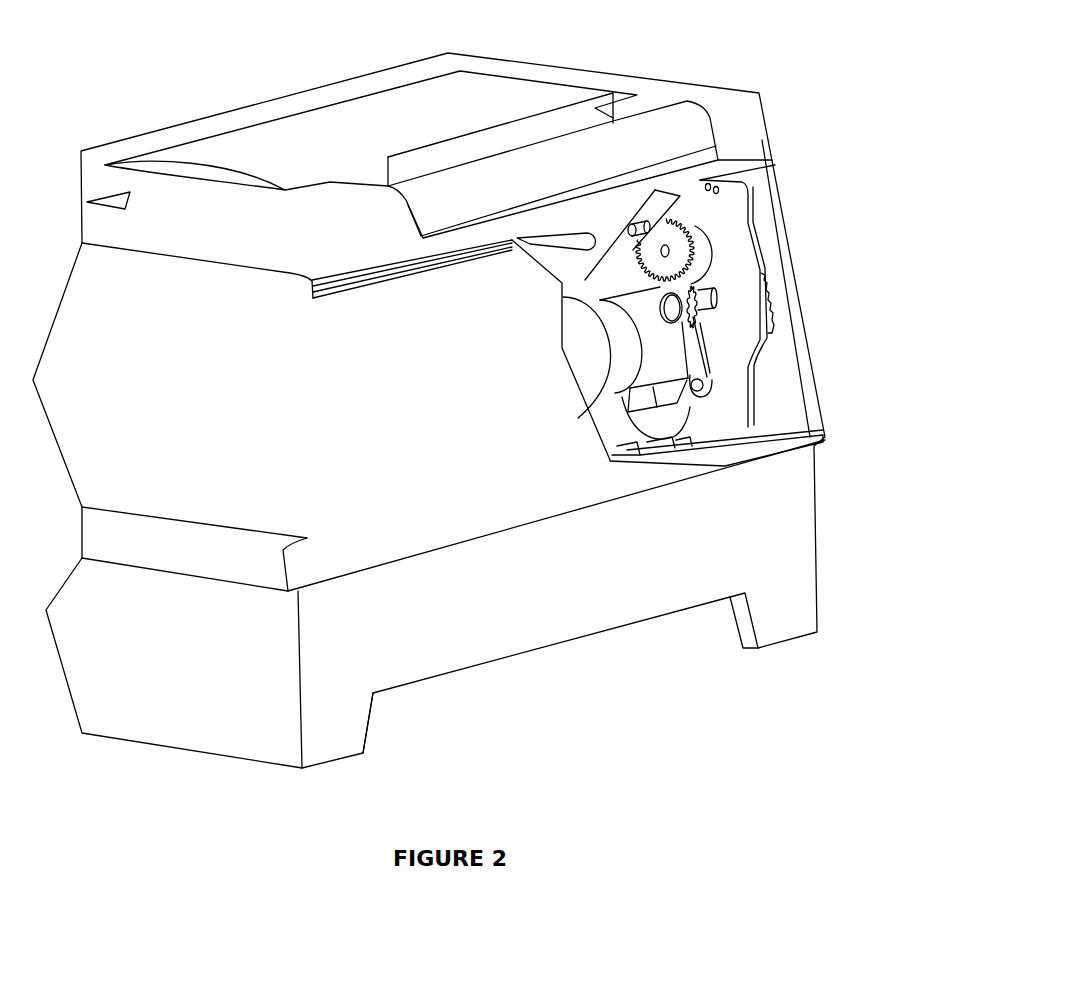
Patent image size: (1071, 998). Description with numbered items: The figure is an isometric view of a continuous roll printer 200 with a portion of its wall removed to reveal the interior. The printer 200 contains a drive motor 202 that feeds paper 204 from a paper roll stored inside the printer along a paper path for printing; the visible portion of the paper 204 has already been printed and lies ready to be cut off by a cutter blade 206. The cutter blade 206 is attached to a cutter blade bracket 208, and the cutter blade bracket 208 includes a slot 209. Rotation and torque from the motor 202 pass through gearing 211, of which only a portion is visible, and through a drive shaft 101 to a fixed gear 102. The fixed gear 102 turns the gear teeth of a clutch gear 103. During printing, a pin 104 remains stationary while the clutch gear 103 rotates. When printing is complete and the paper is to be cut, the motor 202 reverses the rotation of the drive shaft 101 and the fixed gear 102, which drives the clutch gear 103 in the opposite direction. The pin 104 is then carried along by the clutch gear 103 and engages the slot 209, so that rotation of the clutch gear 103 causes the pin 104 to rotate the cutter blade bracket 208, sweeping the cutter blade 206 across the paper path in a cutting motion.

The printer 200 is at (818, 541).
The paper 204 is at (525, 113).
The cutter blade 206 is at (618, 219).
The pin 104 is at (585, 280).
The cutter blade bracket 208 is at (676, 199).
The slot 209 is at (669, 250).
The clutch gear 103 is at (698, 267).
The gearing 211 is at (716, 312).
The drive motor 202 is at (618, 377).
The drive shaft 101 is at (692, 322).
The fixed gear 102 is at (710, 343).